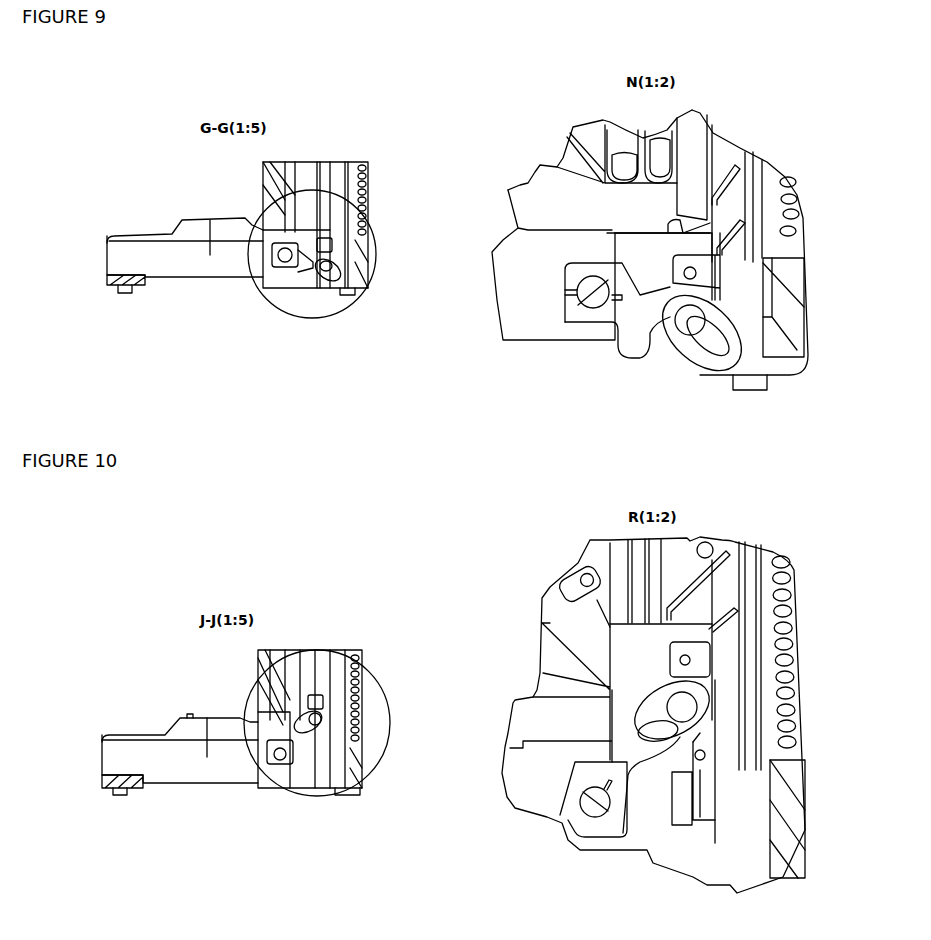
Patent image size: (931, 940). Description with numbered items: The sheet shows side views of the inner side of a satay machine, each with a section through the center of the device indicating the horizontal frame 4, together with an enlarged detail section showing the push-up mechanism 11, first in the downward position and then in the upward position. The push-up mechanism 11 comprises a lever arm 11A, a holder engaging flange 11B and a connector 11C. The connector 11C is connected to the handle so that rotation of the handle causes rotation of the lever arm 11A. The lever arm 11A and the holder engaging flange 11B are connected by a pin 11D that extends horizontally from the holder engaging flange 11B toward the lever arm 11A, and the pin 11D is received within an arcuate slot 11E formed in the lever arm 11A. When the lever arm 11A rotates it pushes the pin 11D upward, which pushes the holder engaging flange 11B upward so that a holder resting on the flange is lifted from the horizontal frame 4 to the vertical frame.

In FIG. 9, the horizontal frame 4 is at (192, 265).
In FIG. 10, the horizontal frame 4 is at (190, 763).
In FIG. 9, the push-up mechanism 11 is at (552, 88).
In FIG. 10, the push-up mechanism 11 is at (510, 562).
In FIG. 9, the lever arm 11A is at (650, 312).
In FIG. 10, the lever arm 11A is at (635, 755).
In FIG. 9, the holder engaging flange 11B is at (648, 258).
In FIG. 10, the holder engaging flange 11B is at (642, 651).
In FIG. 9, the connector 11C is at (593, 292).
In FIG. 10, the connector 11C is at (593, 807).
In FIG. 9, the pin 11D is at (683, 322).
In FIG. 10, the pin 11D is at (690, 703).
In FIG. 9, the arcuate slot 11E is at (725, 357).
In FIG. 10, the arcuate slot 11E is at (643, 725).